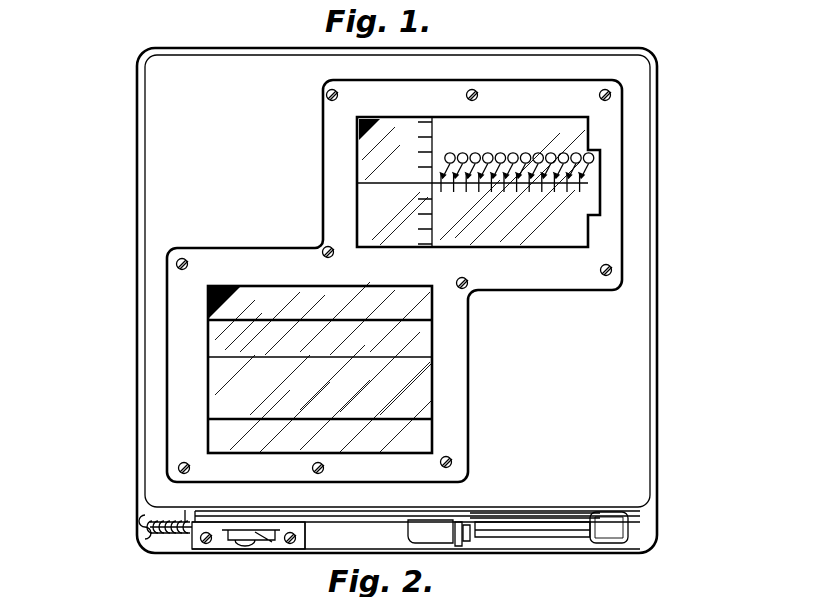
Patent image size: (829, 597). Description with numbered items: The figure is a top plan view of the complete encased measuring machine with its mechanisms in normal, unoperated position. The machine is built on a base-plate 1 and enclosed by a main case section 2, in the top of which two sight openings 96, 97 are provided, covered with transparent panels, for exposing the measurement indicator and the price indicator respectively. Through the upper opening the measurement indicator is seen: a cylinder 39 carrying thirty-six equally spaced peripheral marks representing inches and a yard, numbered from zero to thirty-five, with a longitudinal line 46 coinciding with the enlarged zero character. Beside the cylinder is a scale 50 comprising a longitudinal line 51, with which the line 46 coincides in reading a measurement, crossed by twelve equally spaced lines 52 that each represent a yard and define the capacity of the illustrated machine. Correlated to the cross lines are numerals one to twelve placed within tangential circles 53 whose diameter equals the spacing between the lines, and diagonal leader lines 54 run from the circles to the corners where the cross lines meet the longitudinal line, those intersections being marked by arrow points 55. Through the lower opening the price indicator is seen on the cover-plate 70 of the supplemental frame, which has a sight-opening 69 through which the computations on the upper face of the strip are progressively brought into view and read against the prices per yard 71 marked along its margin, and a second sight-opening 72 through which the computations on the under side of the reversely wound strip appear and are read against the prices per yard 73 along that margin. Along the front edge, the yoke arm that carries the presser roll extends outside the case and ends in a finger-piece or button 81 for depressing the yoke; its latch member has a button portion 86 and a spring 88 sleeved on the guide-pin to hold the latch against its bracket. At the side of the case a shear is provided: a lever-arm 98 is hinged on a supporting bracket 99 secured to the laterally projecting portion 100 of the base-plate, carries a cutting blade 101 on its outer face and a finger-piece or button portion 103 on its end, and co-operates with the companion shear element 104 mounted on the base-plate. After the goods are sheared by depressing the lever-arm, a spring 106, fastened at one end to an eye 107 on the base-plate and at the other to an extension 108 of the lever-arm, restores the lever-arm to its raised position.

The base-plate 1 is at (655, 325).
The main case section 2 is at (156, 152).
The cylinder 39 is at (425, 142).
The longitudinal line 46 is at (372, 192).
The scale 50 is at (510, 198).
The longitudinal line 51 is at (462, 187).
The equally spaced lines 52 is at (555, 188).
The circles 53 is at (505, 143).
The diagonal leader lines 54 is at (592, 172).
The arrow points 55 is at (586, 186).
The sight-opening 69 is at (215, 345).
The cover-plate 70 is at (215, 378).
The prices per yard 71 is at (425, 315).
The sight-opening 72 is at (215, 440).
The prices per yard 73 is at (425, 406).
The finger-piece or button 81 is at (408, 538).
The finger-piece or button portion 86 is at (468, 541).
The spring 88 is at (458, 545).
The sight opening 96 is at (362, 143).
The sight opening 97 is at (210, 326).
The lever-arm 98 is at (345, 514).
The supporting bracket 99 is at (266, 533).
The laterally projecting portion 100 is at (325, 549).
The cutting blade 101 is at (558, 512).
The finger-piece or button portion 103 is at (640, 523).
The companion shear element 104 is at (560, 525).
The spring 106 is at (160, 548).
The eye or fastening 107 is at (165, 534).
The extension 108 is at (188, 512).